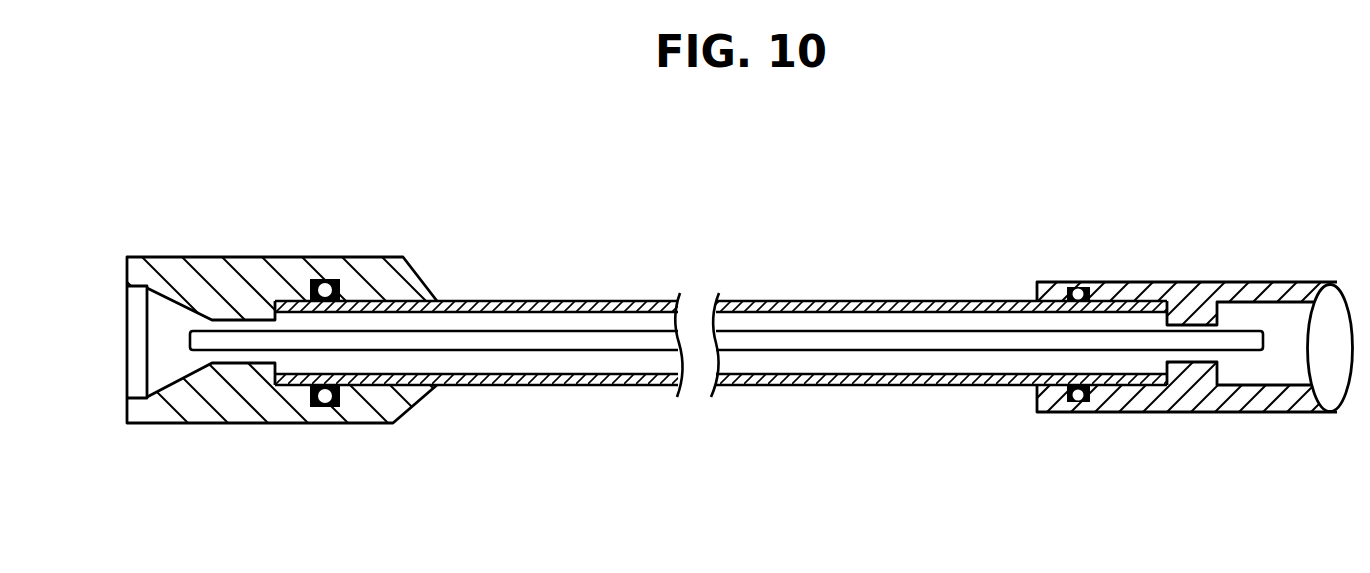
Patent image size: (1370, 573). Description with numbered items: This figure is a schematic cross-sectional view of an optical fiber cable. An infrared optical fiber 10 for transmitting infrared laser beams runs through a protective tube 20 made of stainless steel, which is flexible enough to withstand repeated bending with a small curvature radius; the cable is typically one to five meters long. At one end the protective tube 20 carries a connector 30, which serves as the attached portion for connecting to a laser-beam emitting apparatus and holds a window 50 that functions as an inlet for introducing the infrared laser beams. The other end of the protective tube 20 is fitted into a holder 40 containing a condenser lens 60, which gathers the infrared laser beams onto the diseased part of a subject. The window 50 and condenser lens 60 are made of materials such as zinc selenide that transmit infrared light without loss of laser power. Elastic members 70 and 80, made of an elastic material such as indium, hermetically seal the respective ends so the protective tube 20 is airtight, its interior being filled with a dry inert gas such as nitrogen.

The infrared optical fiber 10 is at (808, 352).
The protective tube 20 is at (555, 302).
The connector 30 is at (293, 257).
The holder 40 is at (1182, 283).
The window 50 is at (133, 318).
The condenser lens 60 is at (1338, 312).
The elastic member 70 is at (323, 397).
The elastic member 80 is at (1078, 402).